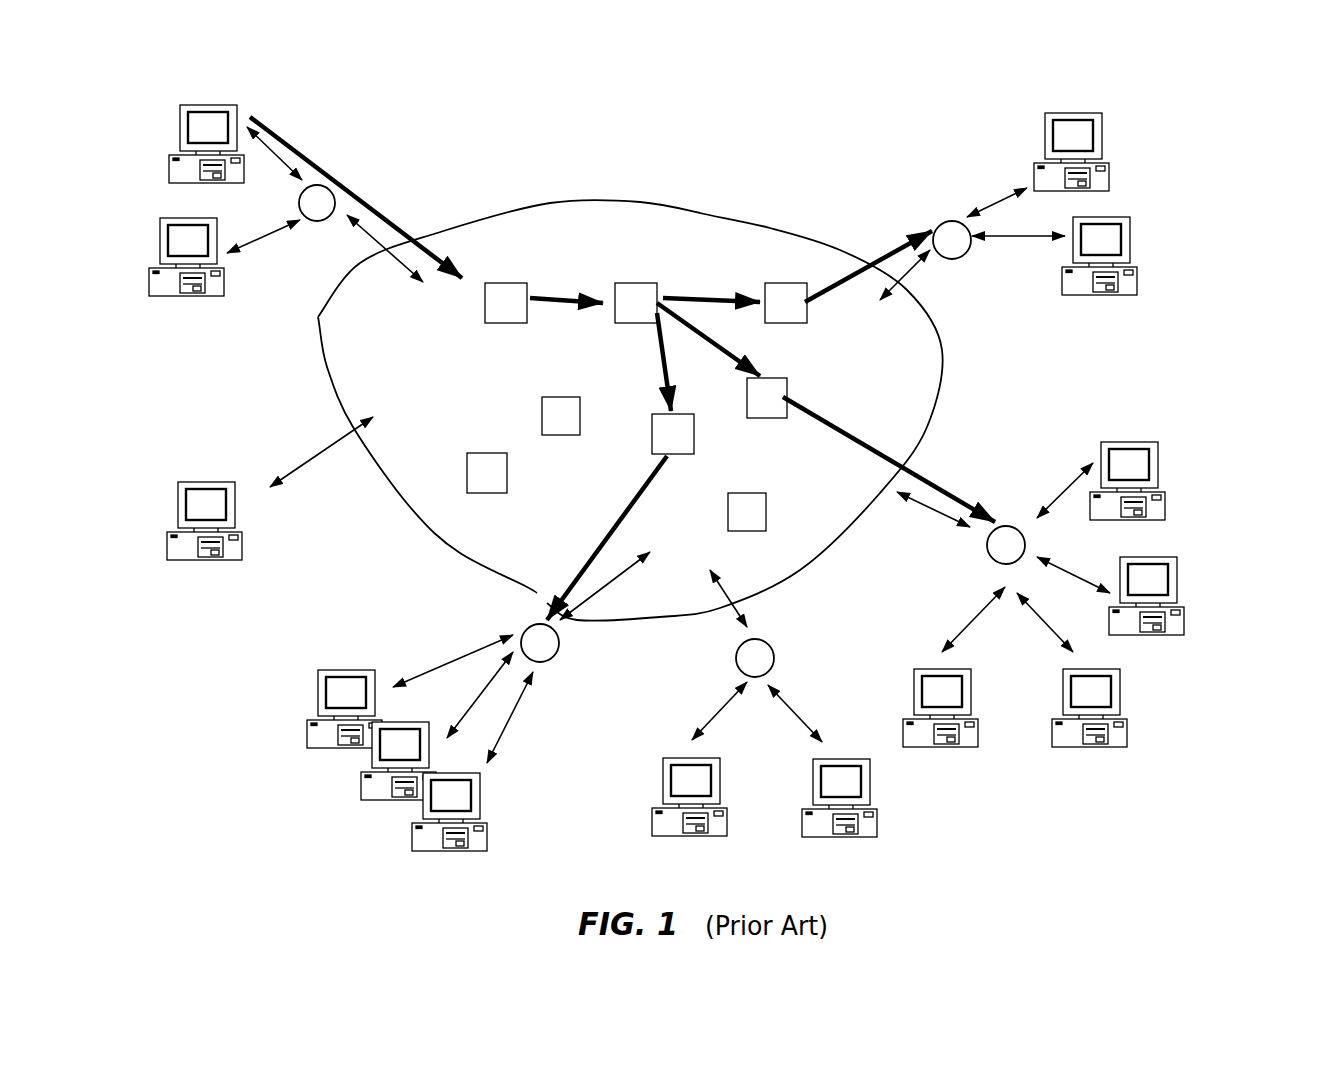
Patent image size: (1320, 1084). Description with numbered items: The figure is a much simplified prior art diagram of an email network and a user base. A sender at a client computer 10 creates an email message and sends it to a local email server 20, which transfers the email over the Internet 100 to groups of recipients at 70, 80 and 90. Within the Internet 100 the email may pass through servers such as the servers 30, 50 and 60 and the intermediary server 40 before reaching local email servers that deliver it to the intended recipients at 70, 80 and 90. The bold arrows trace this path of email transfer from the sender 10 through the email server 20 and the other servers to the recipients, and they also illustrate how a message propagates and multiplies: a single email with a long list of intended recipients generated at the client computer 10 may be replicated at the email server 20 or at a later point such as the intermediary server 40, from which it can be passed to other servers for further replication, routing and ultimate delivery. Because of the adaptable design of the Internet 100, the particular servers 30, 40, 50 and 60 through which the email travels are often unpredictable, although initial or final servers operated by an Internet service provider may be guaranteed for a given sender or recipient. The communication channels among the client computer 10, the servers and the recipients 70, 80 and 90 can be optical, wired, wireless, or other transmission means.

The client computer 10 is at (180, 106).
The email server 20 is at (317, 203).
The server 30 is at (506, 303).
The intermediary server 40 is at (636, 303).
The server 50 is at (786, 303).
The server 60 is at (673, 434).
The recipients 70 is at (310, 803).
The recipients 80 is at (1233, 697).
The recipients 90 is at (1182, 179).
The Internet 100 is at (617, 198).